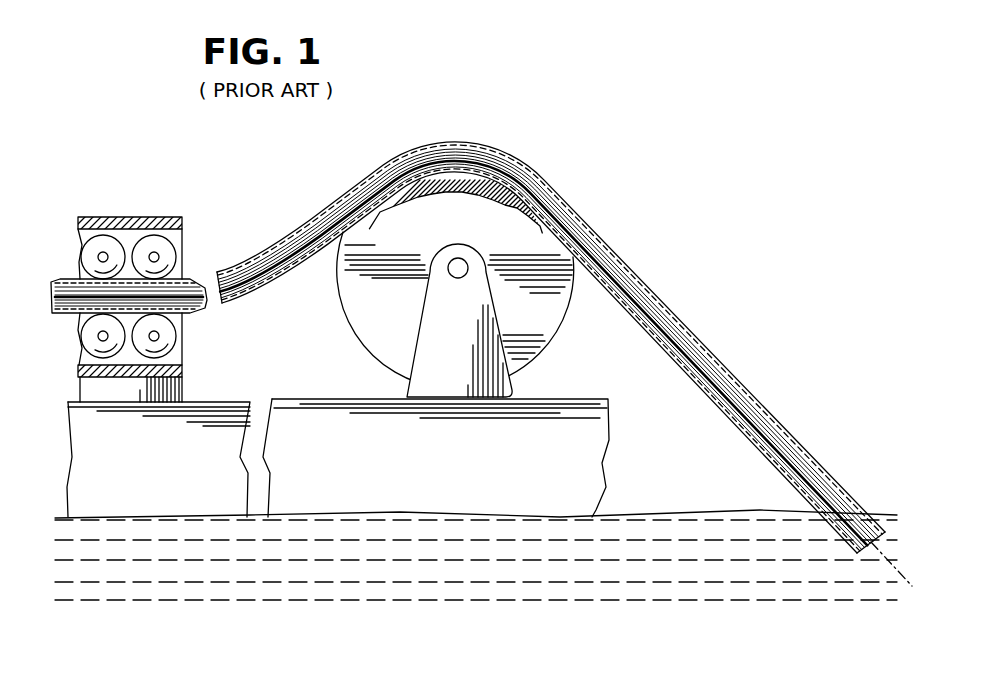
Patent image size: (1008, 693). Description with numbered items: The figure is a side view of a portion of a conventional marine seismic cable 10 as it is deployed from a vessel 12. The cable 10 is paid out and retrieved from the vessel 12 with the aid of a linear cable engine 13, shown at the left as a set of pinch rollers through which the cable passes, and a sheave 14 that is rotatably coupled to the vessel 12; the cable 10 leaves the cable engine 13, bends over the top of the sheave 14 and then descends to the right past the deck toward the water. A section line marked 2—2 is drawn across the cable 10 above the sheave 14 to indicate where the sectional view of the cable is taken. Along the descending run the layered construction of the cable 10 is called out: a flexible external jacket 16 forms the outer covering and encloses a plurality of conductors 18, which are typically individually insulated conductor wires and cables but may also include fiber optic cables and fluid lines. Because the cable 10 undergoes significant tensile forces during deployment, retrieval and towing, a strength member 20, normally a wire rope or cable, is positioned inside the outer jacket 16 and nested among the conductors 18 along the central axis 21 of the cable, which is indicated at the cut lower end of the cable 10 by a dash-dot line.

The section 2— 2 is at (458, 130).
The seismic cable 10 is at (551, 333).
The vessel 12 is at (603, 483).
The linear cable engine 13 is at (125, 227).
The sheave 14 is at (353, 334).
The external jacket 16 is at (663, 300).
The conductors 18 is at (568, 200).
The strength member 20 is at (617, 268).
The central axis 21 is at (893, 567).